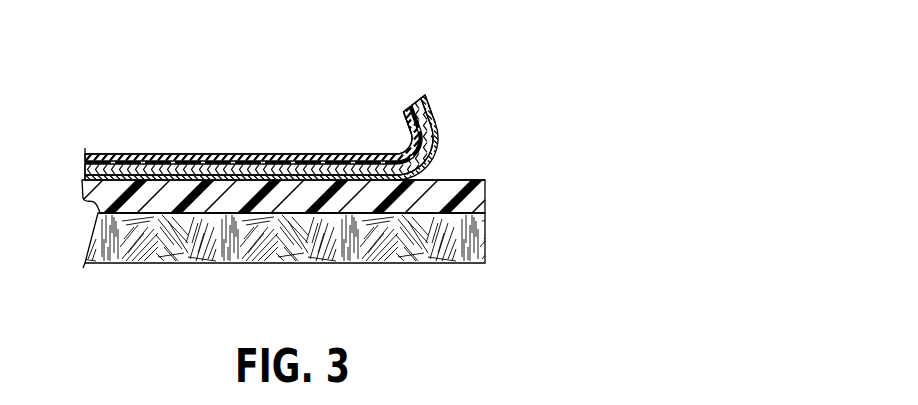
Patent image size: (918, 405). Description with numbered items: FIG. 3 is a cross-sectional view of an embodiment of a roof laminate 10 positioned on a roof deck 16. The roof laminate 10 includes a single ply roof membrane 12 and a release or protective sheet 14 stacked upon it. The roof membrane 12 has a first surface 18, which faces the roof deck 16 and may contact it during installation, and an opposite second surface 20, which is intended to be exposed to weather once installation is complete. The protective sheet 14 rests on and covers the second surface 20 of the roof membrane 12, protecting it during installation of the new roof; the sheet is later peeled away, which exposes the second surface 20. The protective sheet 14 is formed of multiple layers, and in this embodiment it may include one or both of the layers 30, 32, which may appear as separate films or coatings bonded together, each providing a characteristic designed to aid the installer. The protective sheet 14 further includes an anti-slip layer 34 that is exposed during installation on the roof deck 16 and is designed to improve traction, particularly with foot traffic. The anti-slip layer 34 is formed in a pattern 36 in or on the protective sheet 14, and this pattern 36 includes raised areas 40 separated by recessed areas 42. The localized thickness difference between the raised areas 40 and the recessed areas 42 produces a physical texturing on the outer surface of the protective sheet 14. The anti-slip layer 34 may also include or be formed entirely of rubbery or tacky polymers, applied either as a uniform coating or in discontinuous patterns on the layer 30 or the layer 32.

The roof laminate 10 is at (518, 81).
The roof membrane 12 is at (496, 193).
The protective sheet 14 is at (436, 103).
The roof deck 16 is at (496, 242).
The first surface 18 is at (417, 213).
The second surface 20 is at (463, 180).
The layer 30 is at (297, 121).
The layer 32 is at (184, 155).
The anti-slip layer 34 is at (405, 129).
The pattern 36 is at (112, 144).
The raised areas 40 is at (305, 133).
The recessed areas 42 is at (145, 156).